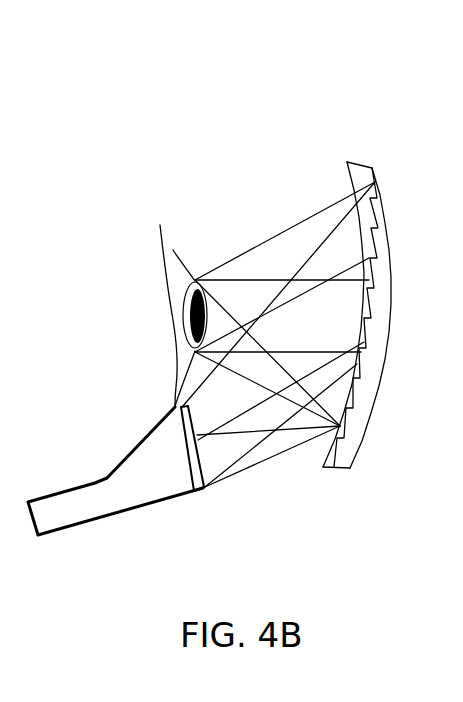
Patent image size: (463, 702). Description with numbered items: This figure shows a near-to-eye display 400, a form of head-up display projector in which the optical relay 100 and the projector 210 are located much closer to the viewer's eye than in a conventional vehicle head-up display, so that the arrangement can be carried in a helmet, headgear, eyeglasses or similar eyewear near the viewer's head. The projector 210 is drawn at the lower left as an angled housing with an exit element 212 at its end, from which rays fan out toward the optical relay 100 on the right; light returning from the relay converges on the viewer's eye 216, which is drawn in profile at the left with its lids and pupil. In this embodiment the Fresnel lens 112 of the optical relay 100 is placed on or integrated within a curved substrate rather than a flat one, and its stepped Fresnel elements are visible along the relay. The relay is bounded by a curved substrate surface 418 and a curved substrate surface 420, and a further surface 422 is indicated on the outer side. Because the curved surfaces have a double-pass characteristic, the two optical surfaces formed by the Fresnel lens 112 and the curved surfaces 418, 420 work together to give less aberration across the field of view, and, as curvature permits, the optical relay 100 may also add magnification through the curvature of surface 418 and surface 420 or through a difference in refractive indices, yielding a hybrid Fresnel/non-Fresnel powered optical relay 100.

The near-to-eye display 400 is at (350, 97).
The optical relay 100 is at (365, 314).
The Fresnel lens 112 is at (380, 240).
The curved substrate surface 420 is at (348, 178).
The outer surface of eyepiece 422 is at (368, 420).
The curved substrate surface 418 is at (350, 468).
The eye of viewer 216 is at (163, 262).
The exit pupil expander / image source output 212 is at (178, 406).
The projector 210 is at (95, 480).